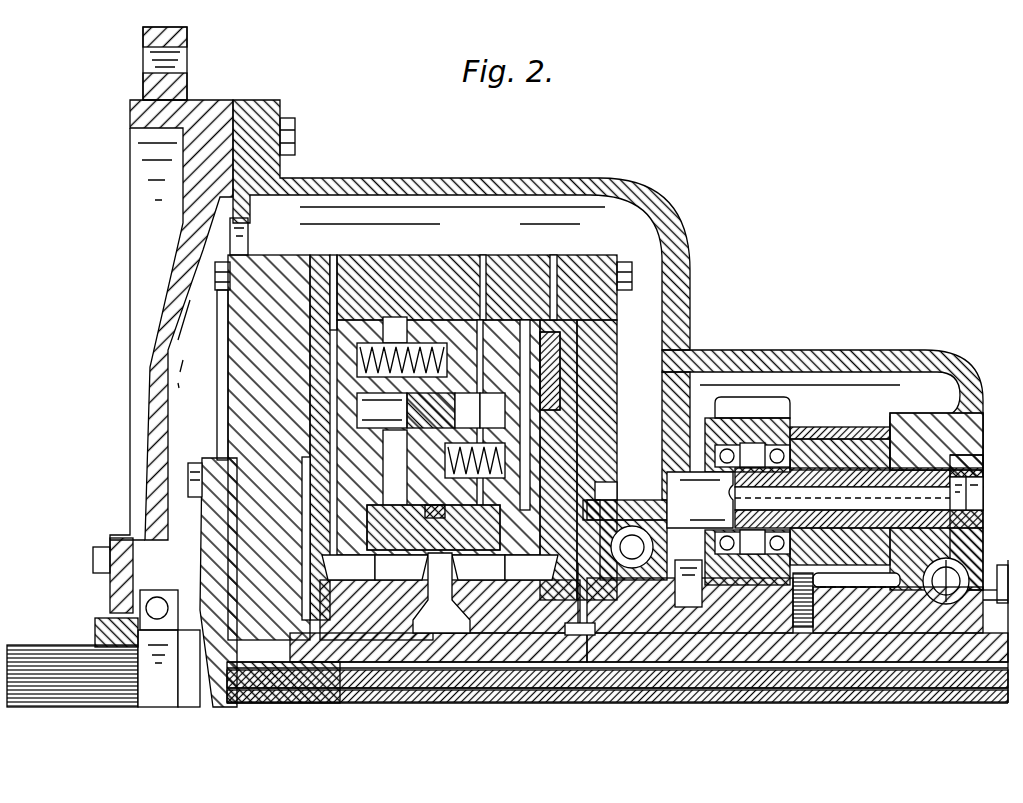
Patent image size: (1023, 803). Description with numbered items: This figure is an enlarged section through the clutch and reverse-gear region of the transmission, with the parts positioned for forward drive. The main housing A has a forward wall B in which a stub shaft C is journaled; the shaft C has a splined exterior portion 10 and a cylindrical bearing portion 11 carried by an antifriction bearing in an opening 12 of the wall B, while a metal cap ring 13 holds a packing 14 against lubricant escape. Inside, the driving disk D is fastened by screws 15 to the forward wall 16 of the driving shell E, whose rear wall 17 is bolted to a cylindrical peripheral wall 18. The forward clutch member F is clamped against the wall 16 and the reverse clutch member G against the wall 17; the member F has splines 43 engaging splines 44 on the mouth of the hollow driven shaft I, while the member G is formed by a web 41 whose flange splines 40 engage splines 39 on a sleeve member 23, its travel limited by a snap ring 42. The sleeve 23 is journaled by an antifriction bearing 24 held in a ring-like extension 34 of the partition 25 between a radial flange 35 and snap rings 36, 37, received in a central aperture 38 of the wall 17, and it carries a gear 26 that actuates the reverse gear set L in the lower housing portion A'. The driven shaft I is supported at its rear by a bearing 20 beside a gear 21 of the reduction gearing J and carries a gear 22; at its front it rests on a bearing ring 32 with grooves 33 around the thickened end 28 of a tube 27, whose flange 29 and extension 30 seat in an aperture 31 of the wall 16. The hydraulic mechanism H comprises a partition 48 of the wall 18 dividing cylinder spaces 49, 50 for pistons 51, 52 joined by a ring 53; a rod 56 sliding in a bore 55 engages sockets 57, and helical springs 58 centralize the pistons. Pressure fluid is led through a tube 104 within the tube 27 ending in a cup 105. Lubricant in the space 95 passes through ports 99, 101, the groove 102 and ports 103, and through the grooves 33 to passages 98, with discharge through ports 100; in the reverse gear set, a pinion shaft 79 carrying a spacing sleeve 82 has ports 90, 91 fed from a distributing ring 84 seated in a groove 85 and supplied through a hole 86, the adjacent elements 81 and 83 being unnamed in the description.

The main housing A is at (461, 225).
The housing portion A' is at (822, 461).
The forward wall B is at (153, 397).
The stub shaft C is at (50, 652).
The driving disk D is at (210, 517).
The driving shell E is at (411, 262).
The movable friction clutch member F is at (300, 268).
The movable friction clutch member G is at (560, 330).
The fluid-pressure mechanism H is at (520, 320).
The driven shaft I is at (617, 693).
The reduction gearing J is at (1001, 565).
The reverse gear set L is at (745, 397).
The splined portion 10 is at (72, 695).
The cylindrical bearing portion 11 is at (155, 695).
The opening 12 is at (200, 560).
The metal cap ring 13 is at (100, 590).
The packing 14 is at (95, 625).
The screws 15 is at (192, 463).
The forward wall 16 is at (222, 397).
The rear wall 17 is at (598, 338).
The cylindrical peripheral wall 18 is at (463, 270).
The antifriction bearing 20 is at (936, 566).
The gear 21 is at (990, 665).
The gear 22 is at (887, 620).
The sleeve member 23 is at (655, 633).
The antifriction bearing 24 is at (650, 545).
The partition 25 is at (678, 432).
The gear 26 is at (730, 592).
The inner supporting member 27 is at (510, 633).
The thickened forward end 28 is at (397, 650).
The lateral flange 29 is at (305, 645).
The forward extension 30 is at (278, 672).
The aperture 31 is at (205, 680).
The bearing ring 32 is at (372, 640).
The longitudinal grooves 33 is at (378, 667).
The ring-like extension 34 is at (640, 505).
The radial flange 35 is at (596, 573).
The snap ring 36 is at (668, 590).
The snap ring 37 is at (605, 505).
The central aperture 38 is at (608, 482).
The longitudinal splines 39 is at (478, 571).
The splines 40 is at (531, 571).
The web 41 is at (560, 383).
The snap ring 42 is at (452, 578).
The splines 43 is at (348, 571).
The longitudinal splines 44 is at (401, 571).
The partition wall 48 is at (420, 495).
The cylinder space 49 is at (483, 315).
The cylinder space 50 is at (395, 275).
The annular piston 51 is at (510, 411).
The annular piston 52 is at (335, 411).
The connecting member 53 is at (440, 525).
The bore 55 is at (467, 410).
The rodlike member 56 is at (492, 410).
The sockets 57 is at (382, 410).
The helical springs 58 is at (445, 461).
The shaft 79 is at (870, 468).
The ball bearing 81 is at (772, 397).
The spacing sleeve 82 is at (845, 450).
The plate 83 is at (805, 430).
The distributing ring 84 is at (975, 462).
The groove 85 is at (965, 455).
The hole 86 is at (975, 500).
The port 90 is at (748, 470).
The lateral port 91 is at (830, 468).
The space 95 is at (783, 665).
The passages 98 is at (334, 262).
The ports 99 is at (450, 633).
The ports 100 is at (554, 258).
The ports 101 is at (578, 636).
The transverse groove 102 is at (560, 640).
The ports 103 is at (575, 612).
The tube 104 is at (740, 693).
The cup 105 is at (245, 690).